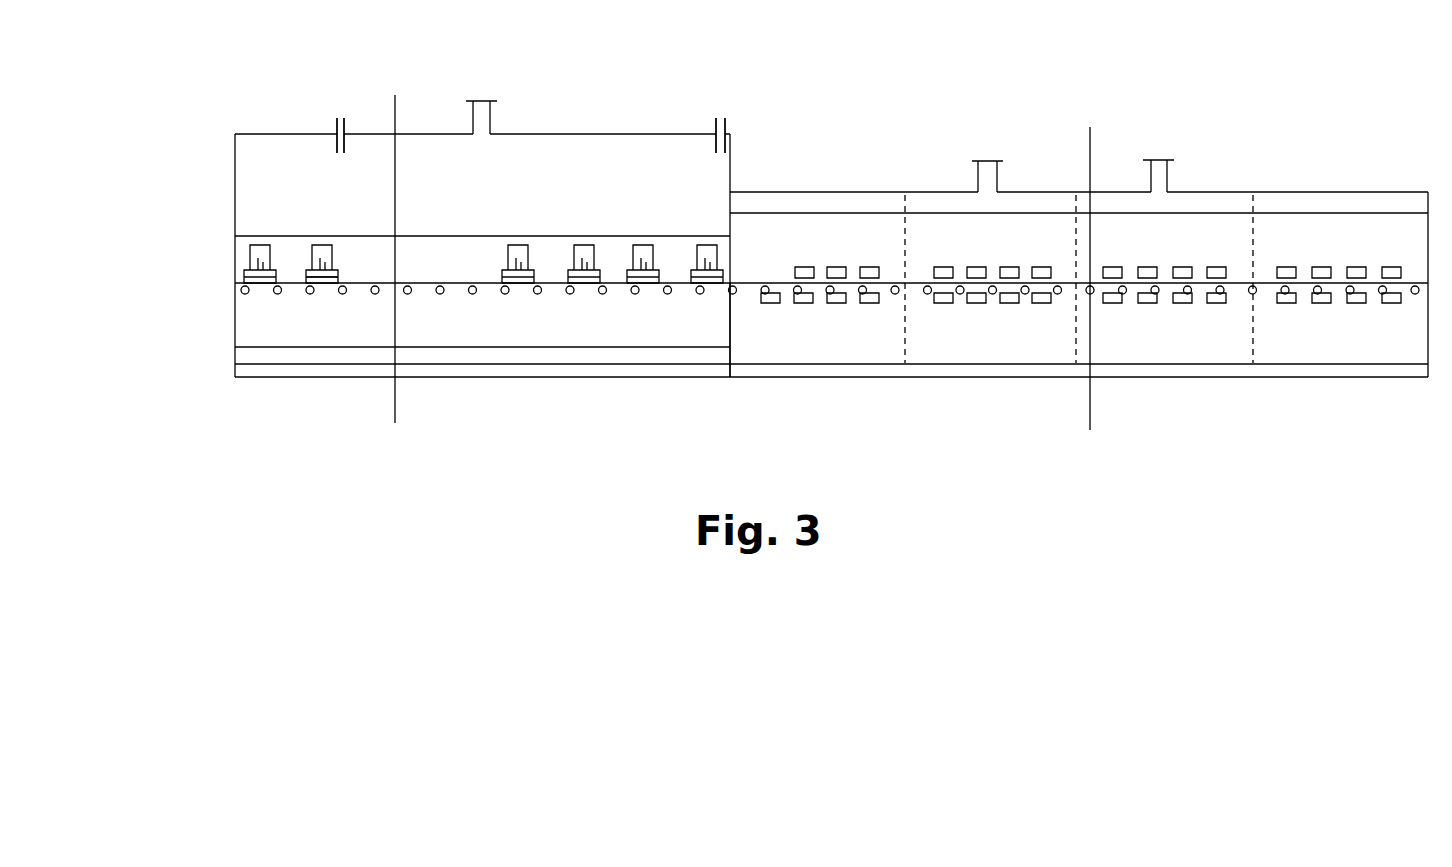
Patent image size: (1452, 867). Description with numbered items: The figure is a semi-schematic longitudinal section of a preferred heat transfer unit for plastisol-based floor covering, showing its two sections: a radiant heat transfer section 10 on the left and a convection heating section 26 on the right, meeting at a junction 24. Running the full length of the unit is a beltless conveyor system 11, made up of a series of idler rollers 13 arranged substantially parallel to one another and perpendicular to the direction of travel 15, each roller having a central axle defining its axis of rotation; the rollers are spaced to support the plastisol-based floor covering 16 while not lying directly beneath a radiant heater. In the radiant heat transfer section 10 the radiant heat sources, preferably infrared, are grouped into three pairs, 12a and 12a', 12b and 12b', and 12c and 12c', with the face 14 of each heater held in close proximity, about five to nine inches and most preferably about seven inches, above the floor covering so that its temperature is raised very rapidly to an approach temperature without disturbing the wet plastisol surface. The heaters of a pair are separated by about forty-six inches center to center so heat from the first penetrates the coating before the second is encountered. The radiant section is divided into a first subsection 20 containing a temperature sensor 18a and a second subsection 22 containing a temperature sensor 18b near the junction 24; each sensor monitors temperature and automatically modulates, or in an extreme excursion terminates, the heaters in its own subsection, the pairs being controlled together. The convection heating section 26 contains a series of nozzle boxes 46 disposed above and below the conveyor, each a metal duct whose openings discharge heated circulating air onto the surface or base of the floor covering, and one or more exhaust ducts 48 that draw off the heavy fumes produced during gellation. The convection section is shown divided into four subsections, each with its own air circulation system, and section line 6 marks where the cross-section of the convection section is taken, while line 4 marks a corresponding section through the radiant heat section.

The radiant heat transfer section 10 is at (268, 150).
The beltless conveyor system 11 is at (243, 281).
The radiant heat source 12a is at (271, 230).
The radiant heat source 12a' is at (339, 230).
The radiant heat source 12b is at (508, 230).
The radiant heat source 12b' is at (572, 224).
The radiant heat source 12c is at (632, 231).
The radiant heat source 12c' is at (699, 224).
The idler roller 13 is at (268, 295).
The face 14 is at (323, 279).
The direction of travel 15 is at (212, 270).
The plastisol-based floor covering 16 is at (455, 278).
The temperature sensor 18a is at (348, 112).
The temperature sensor 18b is at (720, 112).
The first subsection 20 is at (282, 380).
The second subsection 22 is at (562, 365).
The junction 24 is at (728, 365).
The convection heating section 26 is at (842, 192).
The nozzle box 46 is at (947, 268).
The exhaust duct 48 is at (993, 160).
The section line 4- 4 is at (395, 95).
The line 6— 6 is at (1090, 127).